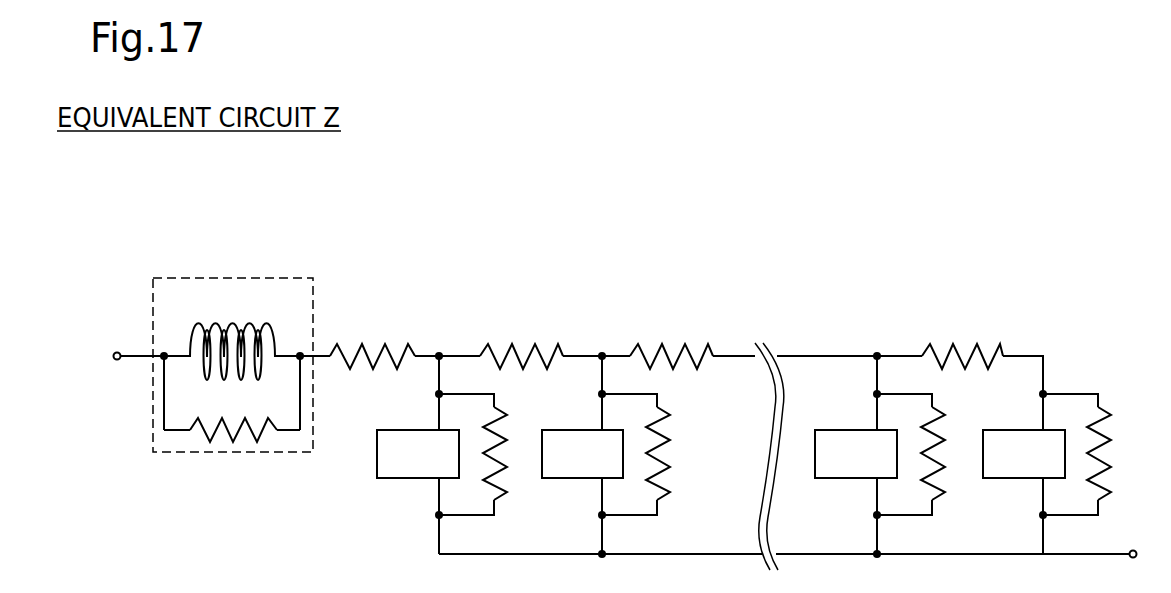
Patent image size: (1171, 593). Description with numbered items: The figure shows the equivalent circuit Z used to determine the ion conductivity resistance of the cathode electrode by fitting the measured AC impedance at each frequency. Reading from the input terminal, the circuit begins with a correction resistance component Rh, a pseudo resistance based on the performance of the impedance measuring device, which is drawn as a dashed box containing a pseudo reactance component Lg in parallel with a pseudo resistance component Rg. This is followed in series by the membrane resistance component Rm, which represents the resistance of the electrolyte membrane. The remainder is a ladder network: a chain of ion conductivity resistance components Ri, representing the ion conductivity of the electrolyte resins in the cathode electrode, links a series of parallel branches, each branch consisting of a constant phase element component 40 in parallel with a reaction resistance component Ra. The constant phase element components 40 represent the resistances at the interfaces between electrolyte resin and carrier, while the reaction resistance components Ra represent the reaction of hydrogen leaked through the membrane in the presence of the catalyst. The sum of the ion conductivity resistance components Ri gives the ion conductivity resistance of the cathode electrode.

The CPE (constant phase element) component 40 is at (405, 480).
The correction resistance component Rh is at (233, 350).
The pseudo reactance component Lg is at (232, 334).
The pseudo resistance component Rg is at (233, 414).
The membrane resistance component Rm is at (372, 342).
The ion conductivity resistance component Ri is at (741, 342).
The reaction resistance component Ra is at (507, 447).